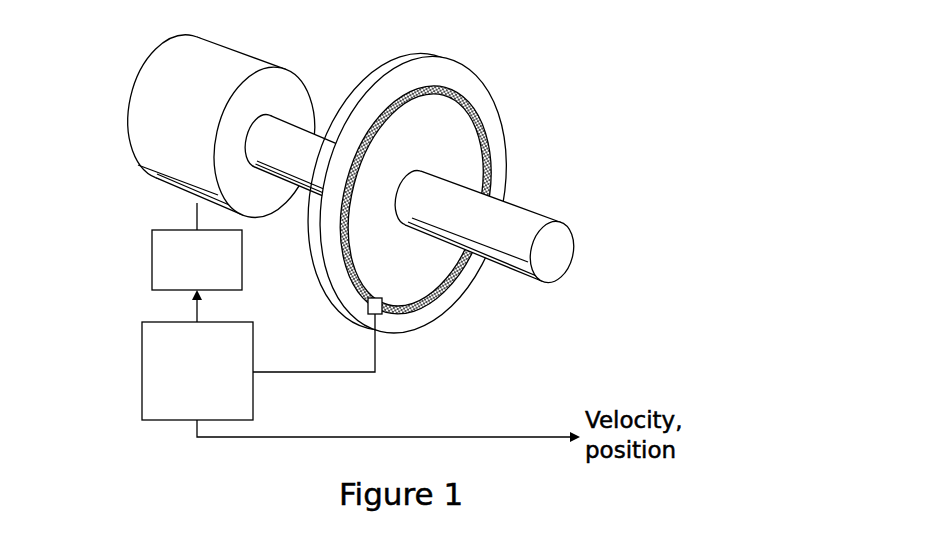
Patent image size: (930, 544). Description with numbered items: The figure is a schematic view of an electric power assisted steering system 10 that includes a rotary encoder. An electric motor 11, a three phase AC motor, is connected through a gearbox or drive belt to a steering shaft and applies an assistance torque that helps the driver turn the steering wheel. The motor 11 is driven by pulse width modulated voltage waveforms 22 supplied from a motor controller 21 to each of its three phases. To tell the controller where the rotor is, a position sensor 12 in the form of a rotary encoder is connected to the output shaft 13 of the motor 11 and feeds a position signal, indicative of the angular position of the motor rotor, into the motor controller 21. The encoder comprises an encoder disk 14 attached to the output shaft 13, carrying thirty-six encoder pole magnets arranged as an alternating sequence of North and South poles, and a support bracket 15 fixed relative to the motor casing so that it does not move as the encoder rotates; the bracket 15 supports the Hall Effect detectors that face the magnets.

The system 10 is at (512, 60).
The electric motor 11 is at (125, 150).
The position sensor 12 is at (508, 140).
The output shaft 13 is at (578, 240).
The encoder disk 14 is at (376, 80).
The support bracket 15 is at (368, 310).
The motor controller 21 is at (197, 371).
The pulse width modulated voltage waveforms 22 is at (197, 260).